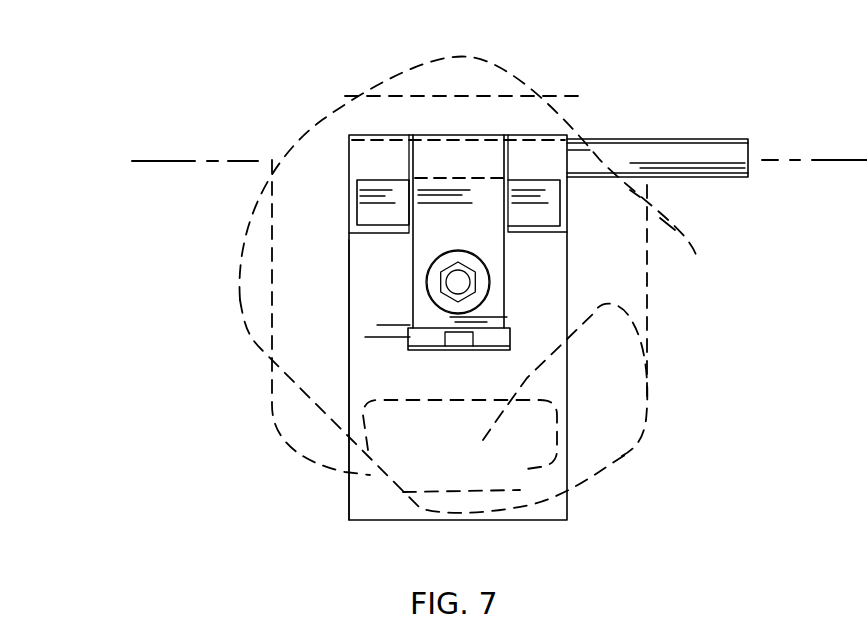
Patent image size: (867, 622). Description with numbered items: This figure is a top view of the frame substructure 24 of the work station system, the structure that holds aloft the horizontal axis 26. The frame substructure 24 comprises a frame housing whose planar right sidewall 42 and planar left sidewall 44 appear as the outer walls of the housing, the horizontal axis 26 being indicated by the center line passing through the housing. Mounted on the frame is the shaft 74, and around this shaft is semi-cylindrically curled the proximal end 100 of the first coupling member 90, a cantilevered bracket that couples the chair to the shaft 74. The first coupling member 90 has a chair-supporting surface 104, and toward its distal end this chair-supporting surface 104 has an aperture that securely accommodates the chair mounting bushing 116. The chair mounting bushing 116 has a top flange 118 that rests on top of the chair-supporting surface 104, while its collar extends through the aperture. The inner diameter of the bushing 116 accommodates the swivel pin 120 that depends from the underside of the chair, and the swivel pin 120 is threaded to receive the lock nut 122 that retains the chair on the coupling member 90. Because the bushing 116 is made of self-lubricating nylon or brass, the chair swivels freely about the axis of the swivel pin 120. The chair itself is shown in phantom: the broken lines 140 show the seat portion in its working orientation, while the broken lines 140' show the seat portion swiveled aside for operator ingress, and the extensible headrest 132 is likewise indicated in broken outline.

The frame substructure 24 is at (715, 240).
The horizontal axis 26 is at (770, 157).
The right sidewall 42 is at (568, 266).
The left sidewall 44 is at (350, 279).
The shaft 74 is at (683, 153).
The first coupling member 90 is at (510, 293).
The proximal end 100 is at (449, 135).
The chair-supporting surface 104 is at (482, 213).
The chair mounting bushing 116 is at (478, 303).
The top flange 118 is at (478, 300).
The swivel pin 120 is at (460, 283).
The lock nut 122 is at (477, 283).
The extensible headrest 132 is at (610, 404).
The seat portion 140 is at (468, 292).
The seat portion in ingress orientation 140' is at (698, 248).